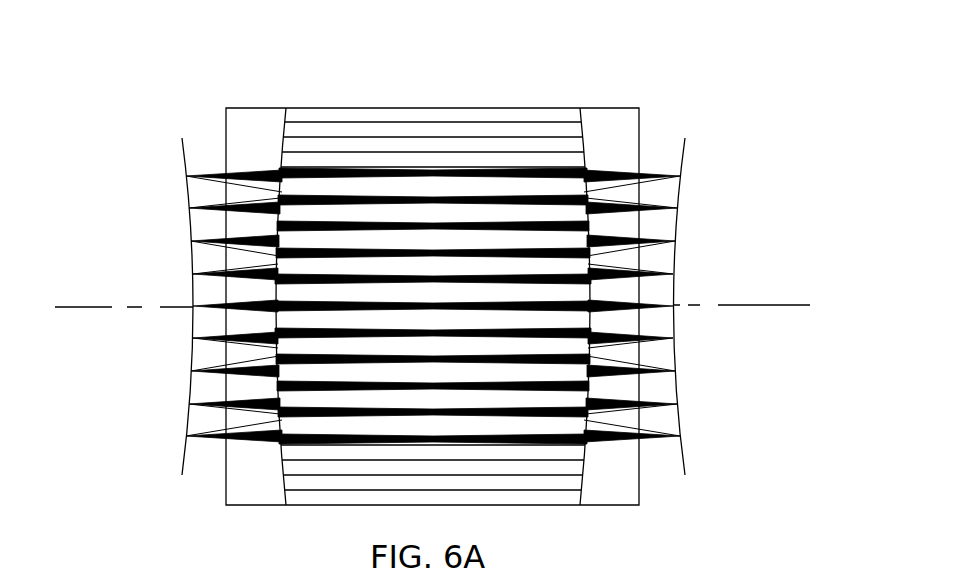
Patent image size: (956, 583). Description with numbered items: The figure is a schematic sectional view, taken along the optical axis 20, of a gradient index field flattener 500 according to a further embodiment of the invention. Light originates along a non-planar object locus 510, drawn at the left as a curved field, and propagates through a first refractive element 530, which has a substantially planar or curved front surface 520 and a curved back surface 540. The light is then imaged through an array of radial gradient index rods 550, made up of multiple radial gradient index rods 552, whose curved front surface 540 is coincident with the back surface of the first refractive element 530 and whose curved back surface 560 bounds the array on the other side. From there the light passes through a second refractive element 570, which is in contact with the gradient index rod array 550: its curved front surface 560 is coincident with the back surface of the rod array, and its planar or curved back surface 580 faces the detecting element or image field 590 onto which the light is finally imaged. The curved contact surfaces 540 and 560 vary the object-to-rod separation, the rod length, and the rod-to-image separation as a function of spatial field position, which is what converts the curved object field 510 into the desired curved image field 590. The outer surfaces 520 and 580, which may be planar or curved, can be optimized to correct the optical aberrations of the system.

The gradient index field flattener 500 is at (138, 51).
The optical axis 20 is at (73, 306).
The non-planar object locus 510 is at (183, 159).
The front surface of the first refractive element 520 is at (226, 128).
The first refractive element 530 is at (250, 118).
The curved back surface of the first refractive element 540 is at (274, 110).
The array of radial gradient index rods 550 is at (386, 108).
The radial gradient index rod 552 is at (478, 113).
The curved back surface of the gradient index rod array 560 is at (586, 110).
The second refractive element 570 is at (613, 117).
The back surface of the second refractive element 580 is at (641, 128).
The detecting element or image field 590 is at (684, 158).